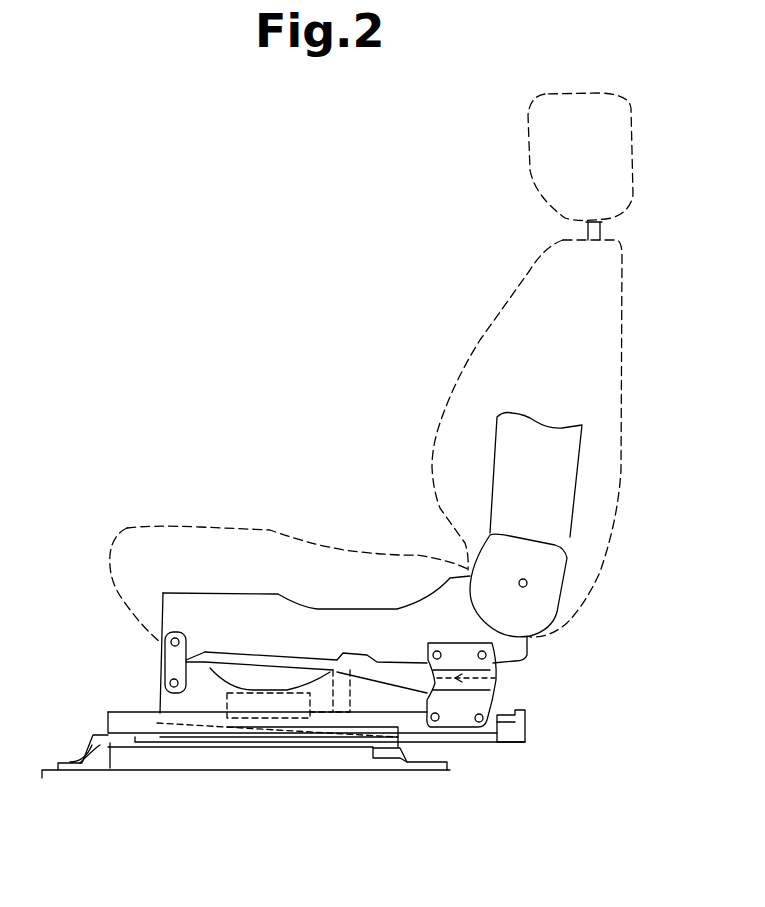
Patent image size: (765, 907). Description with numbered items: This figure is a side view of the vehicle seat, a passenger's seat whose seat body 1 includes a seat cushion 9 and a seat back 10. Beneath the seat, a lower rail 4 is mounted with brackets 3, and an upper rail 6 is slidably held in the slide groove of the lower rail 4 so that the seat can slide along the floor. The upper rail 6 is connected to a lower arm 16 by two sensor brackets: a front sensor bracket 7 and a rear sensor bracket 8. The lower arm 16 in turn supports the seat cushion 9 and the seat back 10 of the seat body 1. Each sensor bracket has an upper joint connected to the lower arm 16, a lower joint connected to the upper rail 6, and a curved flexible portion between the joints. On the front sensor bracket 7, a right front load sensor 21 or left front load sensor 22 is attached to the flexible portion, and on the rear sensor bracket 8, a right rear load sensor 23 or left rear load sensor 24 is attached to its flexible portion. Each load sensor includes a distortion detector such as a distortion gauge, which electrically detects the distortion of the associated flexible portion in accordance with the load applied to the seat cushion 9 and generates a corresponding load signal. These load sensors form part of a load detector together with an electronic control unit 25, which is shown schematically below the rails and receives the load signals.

The seat body 1 is at (442, 331).
The seat back 10 is at (621, 343).
The seat cushion 9 is at (170, 527).
The lower arm 16 is at (260, 604).
The rear sensor bracket 8 is at (463, 647).
The front sensor bracket 7 is at (184, 637).
The left front load sensor 22 is at (226, 670).
The right front load sensor 21 is at (306, 661).
The left rear load sensor 24 is at (527, 685).
The right rear load sensor 23 is at (500, 688).
The lower rail 4 is at (108, 712).
The bracket 3 is at (70, 763).
The electronic control unit (ECU) 25 is at (220, 723).
The upper rail 6 is at (507, 743).